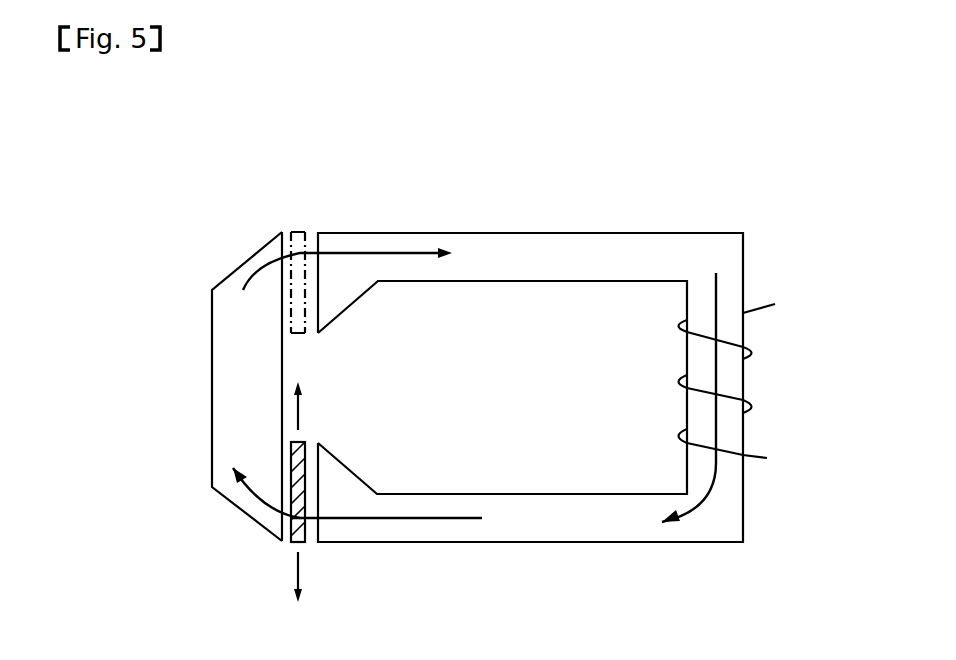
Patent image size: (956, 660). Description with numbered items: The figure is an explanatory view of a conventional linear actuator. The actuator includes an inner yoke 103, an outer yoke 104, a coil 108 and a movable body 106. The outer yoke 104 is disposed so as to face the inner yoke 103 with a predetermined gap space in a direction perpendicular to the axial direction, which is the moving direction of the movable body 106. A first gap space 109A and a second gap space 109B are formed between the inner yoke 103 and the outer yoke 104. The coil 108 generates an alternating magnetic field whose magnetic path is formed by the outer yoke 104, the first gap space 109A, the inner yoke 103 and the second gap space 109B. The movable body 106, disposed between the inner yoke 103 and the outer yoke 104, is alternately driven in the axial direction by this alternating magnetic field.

The inner yoke 103 is at (252, 250).
The outer yoke 104 is at (350, 288).
The movable body 106 is at (297, 237).
The coil 108 is at (757, 351).
The first gap space 109A is at (288, 327).
The second gap space 109B is at (292, 458).